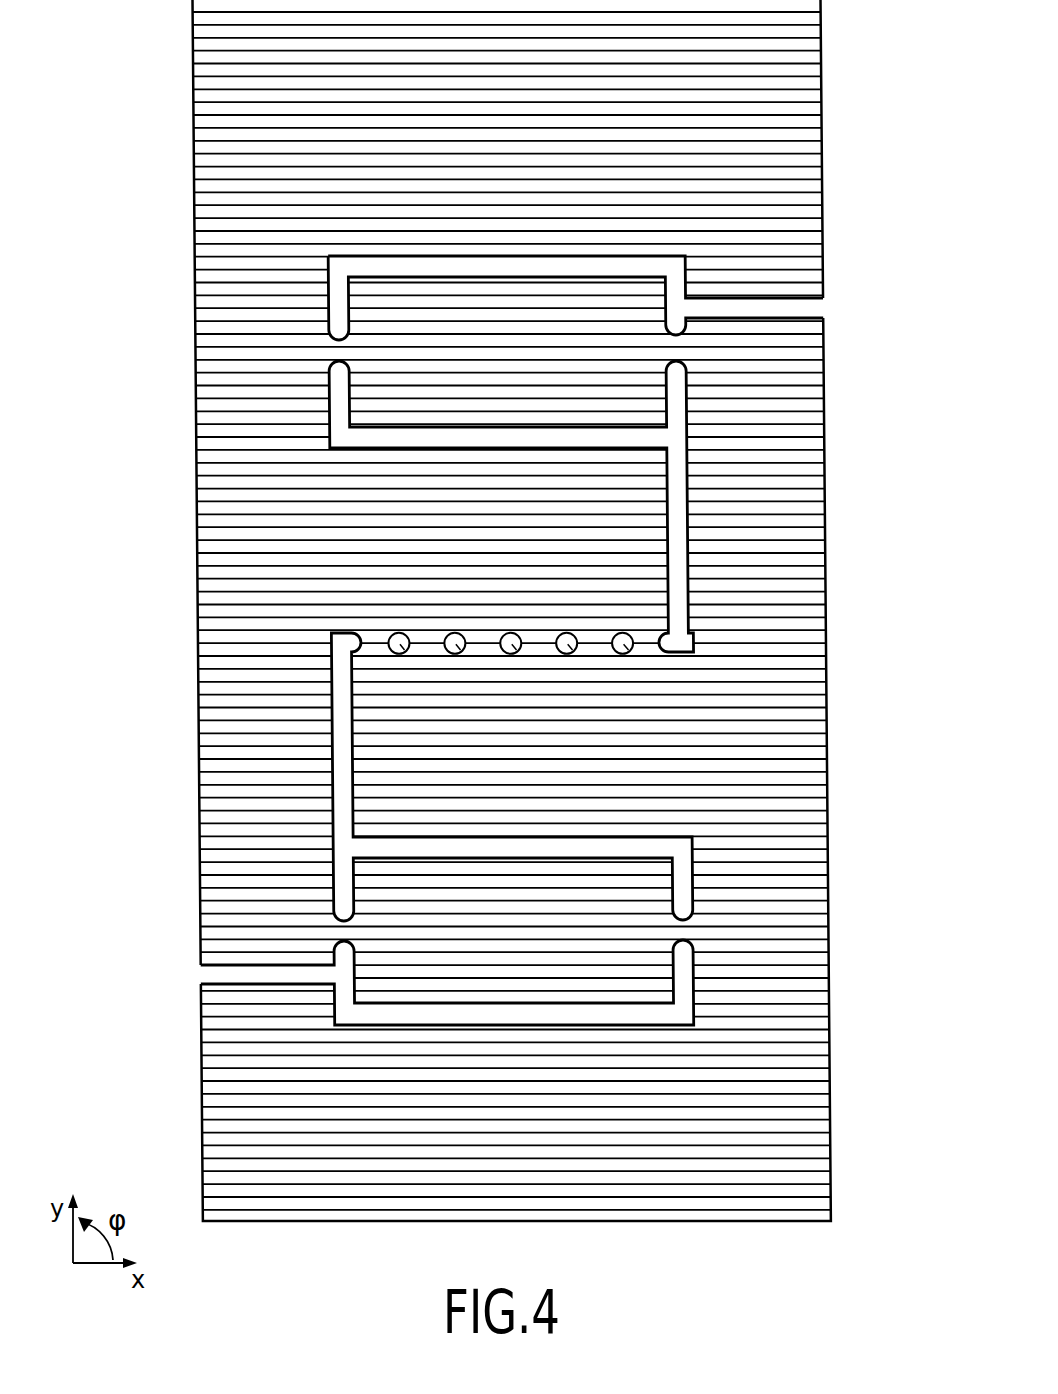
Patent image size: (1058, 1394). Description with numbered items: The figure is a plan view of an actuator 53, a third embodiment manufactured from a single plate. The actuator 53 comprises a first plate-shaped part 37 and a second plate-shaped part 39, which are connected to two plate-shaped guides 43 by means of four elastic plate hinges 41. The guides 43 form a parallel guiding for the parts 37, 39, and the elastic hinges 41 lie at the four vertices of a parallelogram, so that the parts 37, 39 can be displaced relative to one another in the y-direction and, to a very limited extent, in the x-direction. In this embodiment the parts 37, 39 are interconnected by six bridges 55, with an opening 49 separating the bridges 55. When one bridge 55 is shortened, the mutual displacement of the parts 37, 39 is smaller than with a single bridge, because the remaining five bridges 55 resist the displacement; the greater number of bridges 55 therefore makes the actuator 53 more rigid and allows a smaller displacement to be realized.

The first plate-shaped part 37 is at (800, 148).
The second plate-shaped part 39 is at (797, 780).
The elastic plate hinge 41 is at (338, 352).
The plate-shaped guide 43 is at (643, 401).
The opening 49 is at (613, 652).
The actuator 53 is at (172, 607).
The bridge 55 is at (645, 638).